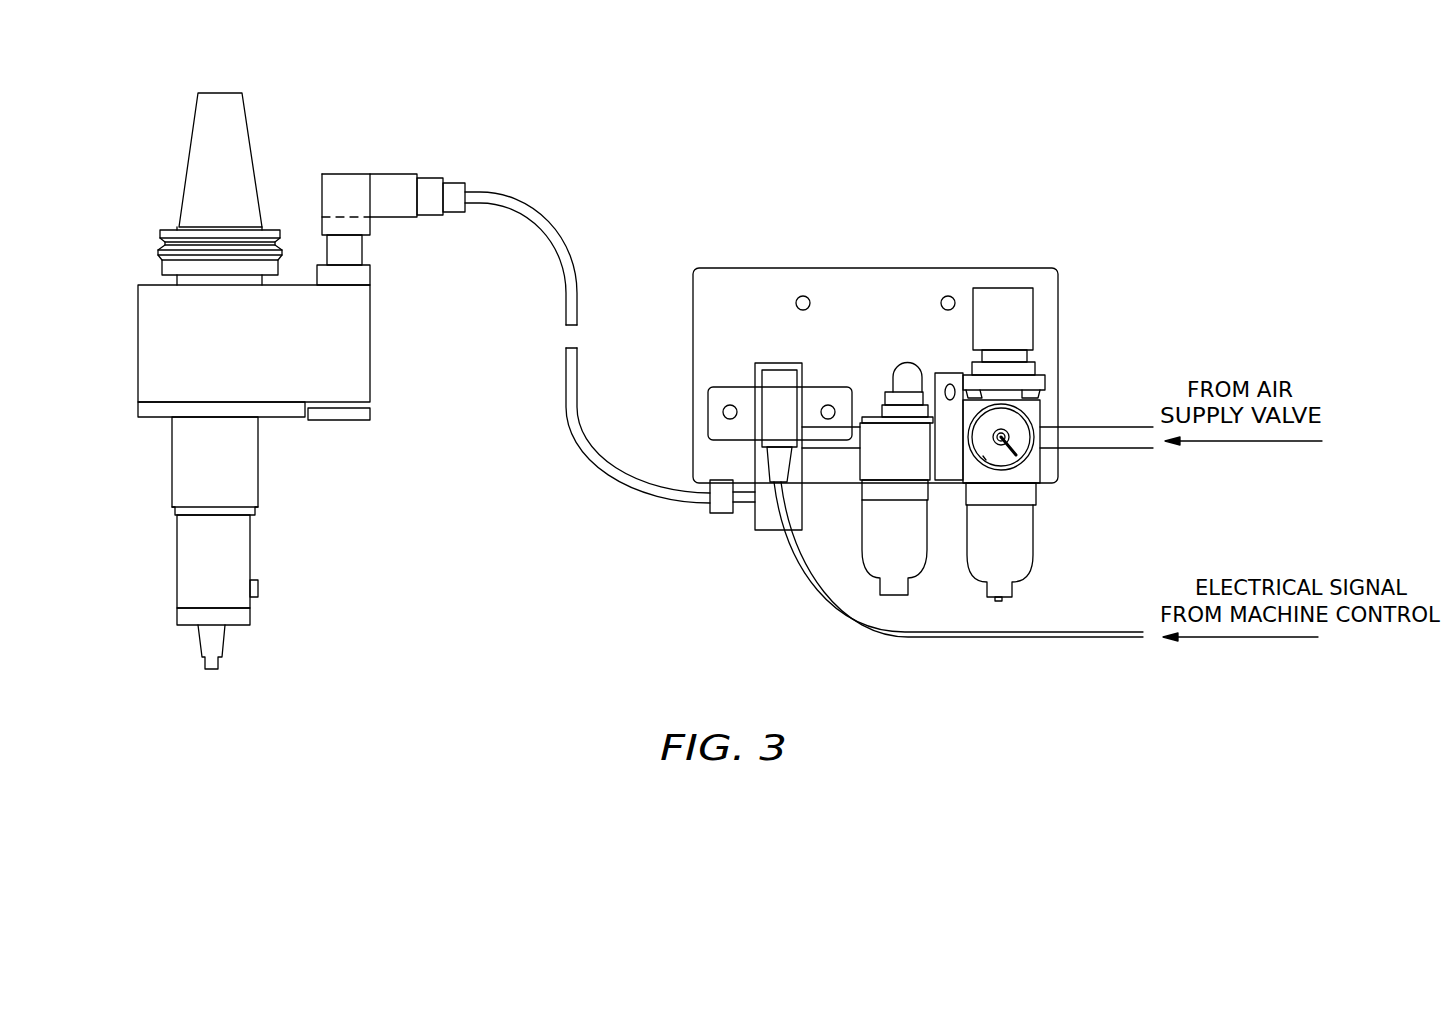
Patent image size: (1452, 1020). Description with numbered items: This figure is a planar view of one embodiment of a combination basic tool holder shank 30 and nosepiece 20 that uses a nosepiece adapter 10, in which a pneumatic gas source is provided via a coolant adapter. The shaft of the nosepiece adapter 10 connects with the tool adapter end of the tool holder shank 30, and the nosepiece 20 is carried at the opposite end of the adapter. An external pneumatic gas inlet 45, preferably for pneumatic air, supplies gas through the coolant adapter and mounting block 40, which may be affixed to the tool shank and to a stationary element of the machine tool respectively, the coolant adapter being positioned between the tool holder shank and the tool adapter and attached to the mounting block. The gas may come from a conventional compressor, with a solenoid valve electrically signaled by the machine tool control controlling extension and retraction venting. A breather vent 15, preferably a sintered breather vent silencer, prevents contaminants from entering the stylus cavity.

The nosepiece adapter 10 is at (250, 542).
The breather vent 15 is at (258, 587).
The nosepiece 20 is at (250, 618).
The tool holder shank 30 is at (250, 143).
The coolant adapter and mounting block 40 is at (370, 355).
The external pneumatic gas inlet 45 is at (392, 188).